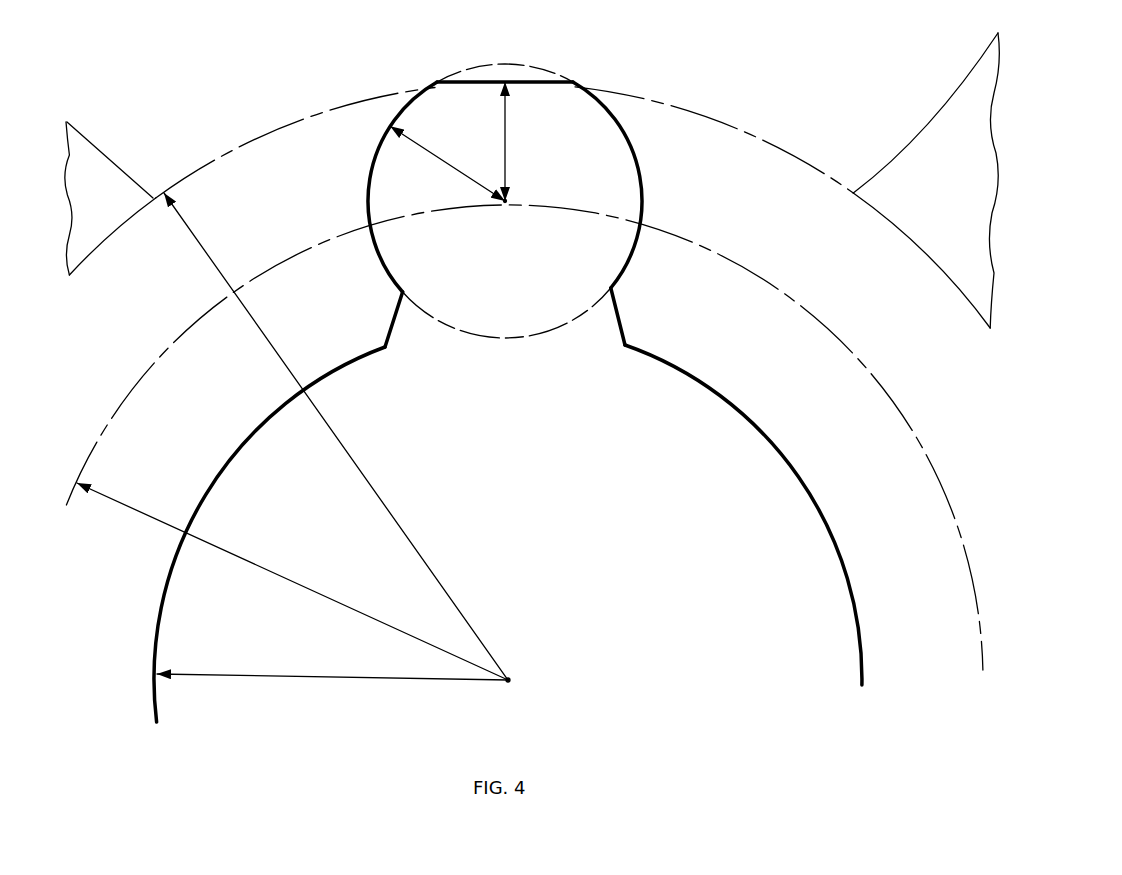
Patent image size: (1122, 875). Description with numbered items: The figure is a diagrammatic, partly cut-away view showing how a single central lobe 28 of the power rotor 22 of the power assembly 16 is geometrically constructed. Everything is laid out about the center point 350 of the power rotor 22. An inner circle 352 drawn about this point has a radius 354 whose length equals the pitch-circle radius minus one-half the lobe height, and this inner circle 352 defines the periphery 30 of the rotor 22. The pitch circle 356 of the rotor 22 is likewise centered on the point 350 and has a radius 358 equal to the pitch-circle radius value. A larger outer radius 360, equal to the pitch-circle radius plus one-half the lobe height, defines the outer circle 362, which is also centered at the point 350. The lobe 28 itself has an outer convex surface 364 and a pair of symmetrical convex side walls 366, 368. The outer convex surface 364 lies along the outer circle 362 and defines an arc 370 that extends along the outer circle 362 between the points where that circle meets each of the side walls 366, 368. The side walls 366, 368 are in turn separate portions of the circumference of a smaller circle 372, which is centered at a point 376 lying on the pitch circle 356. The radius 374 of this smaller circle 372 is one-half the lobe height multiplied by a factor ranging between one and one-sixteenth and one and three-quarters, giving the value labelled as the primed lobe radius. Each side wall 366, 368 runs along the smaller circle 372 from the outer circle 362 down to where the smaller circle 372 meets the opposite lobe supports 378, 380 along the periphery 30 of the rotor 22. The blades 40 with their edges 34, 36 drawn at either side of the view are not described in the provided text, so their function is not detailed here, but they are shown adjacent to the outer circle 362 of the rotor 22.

The power assembly 16 is at (524, 437).
The power rotor 22 is at (527, 533).
The lobe 28 is at (498, 207).
The periphery 30 is at (762, 515).
The blade edge surface 34 is at (117, 233).
The blade tip 36 is at (529, 254).
The blade 40 is at (532, 180).
The center point 350 is at (512, 679).
The inner circle 352 is at (743, 515).
The radius 354 is at (326, 679).
The pitch circle 356 is at (945, 495).
The radius 358 is at (300, 586).
The outer radius 360 is at (364, 478).
The outer circle 362 is at (844, 191).
The outer convex surface 364 is at (545, 81).
The convex side wall 366 is at (370, 181).
The convex side wall 368 is at (641, 190).
The arc 370 is at (480, 82).
The smaller circle 372 is at (517, 338).
The radius 374 is at (454, 184).
The center point 376 is at (508, 207).
The lobe support 378 is at (392, 327).
The lobe support 380 is at (623, 330).